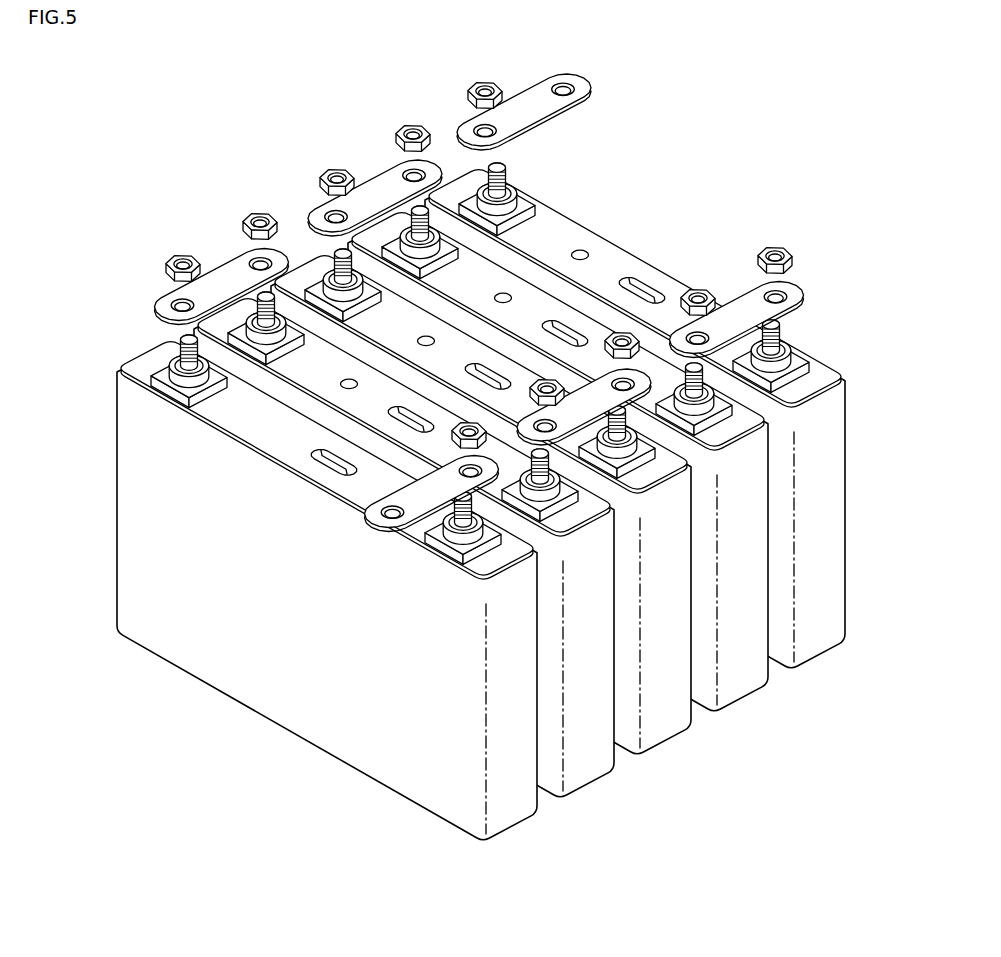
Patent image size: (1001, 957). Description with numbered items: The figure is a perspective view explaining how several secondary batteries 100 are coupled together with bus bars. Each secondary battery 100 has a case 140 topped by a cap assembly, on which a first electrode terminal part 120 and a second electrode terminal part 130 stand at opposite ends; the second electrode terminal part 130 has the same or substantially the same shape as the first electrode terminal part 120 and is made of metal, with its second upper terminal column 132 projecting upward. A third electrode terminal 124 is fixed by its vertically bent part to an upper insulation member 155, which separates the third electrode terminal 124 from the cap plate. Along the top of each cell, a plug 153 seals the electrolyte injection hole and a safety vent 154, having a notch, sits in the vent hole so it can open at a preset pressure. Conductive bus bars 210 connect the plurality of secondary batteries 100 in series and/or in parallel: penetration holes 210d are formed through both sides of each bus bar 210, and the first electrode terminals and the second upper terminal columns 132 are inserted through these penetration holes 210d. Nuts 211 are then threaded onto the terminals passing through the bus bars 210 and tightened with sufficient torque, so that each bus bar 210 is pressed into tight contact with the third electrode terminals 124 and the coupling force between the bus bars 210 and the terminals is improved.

The secondary battery 100 is at (450, 457).
The first electrode terminal part 120 is at (180, 337).
The third electrode terminal 124 is at (172, 385).
The second electrode terminal part 130 is at (279, 291).
The second upper terminal column 132 is at (289, 344).
The case 140 is at (314, 717).
The plug 153 is at (357, 384).
The safety vent 154 is at (323, 461).
The upper insulation member 155 is at (190, 338).
The bus bar 210 is at (228, 270).
The penetration hole 210d is at (264, 258).
The nut 211 is at (250, 216).